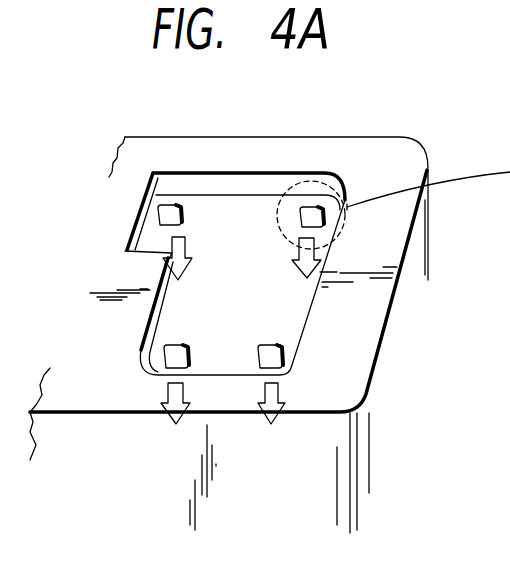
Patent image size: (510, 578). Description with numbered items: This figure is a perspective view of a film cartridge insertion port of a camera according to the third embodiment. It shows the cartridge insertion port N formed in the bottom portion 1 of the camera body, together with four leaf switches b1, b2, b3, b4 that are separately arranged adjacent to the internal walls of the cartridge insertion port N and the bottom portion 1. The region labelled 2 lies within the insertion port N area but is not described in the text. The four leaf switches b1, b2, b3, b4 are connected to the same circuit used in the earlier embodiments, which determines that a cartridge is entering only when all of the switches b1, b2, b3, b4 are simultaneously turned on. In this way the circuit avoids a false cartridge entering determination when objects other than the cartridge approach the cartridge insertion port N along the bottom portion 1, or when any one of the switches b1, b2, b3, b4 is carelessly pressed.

The bottom portion 1 is at (270, 307).
The recess 2 is at (242, 236).
The cartridge insertion port N is at (235, 231).
The leaf switch b1 is at (311, 174).
The leaf switch b2 is at (302, 377).
The leaf switch b3 is at (141, 376).
The leaf switch b4 is at (171, 157).